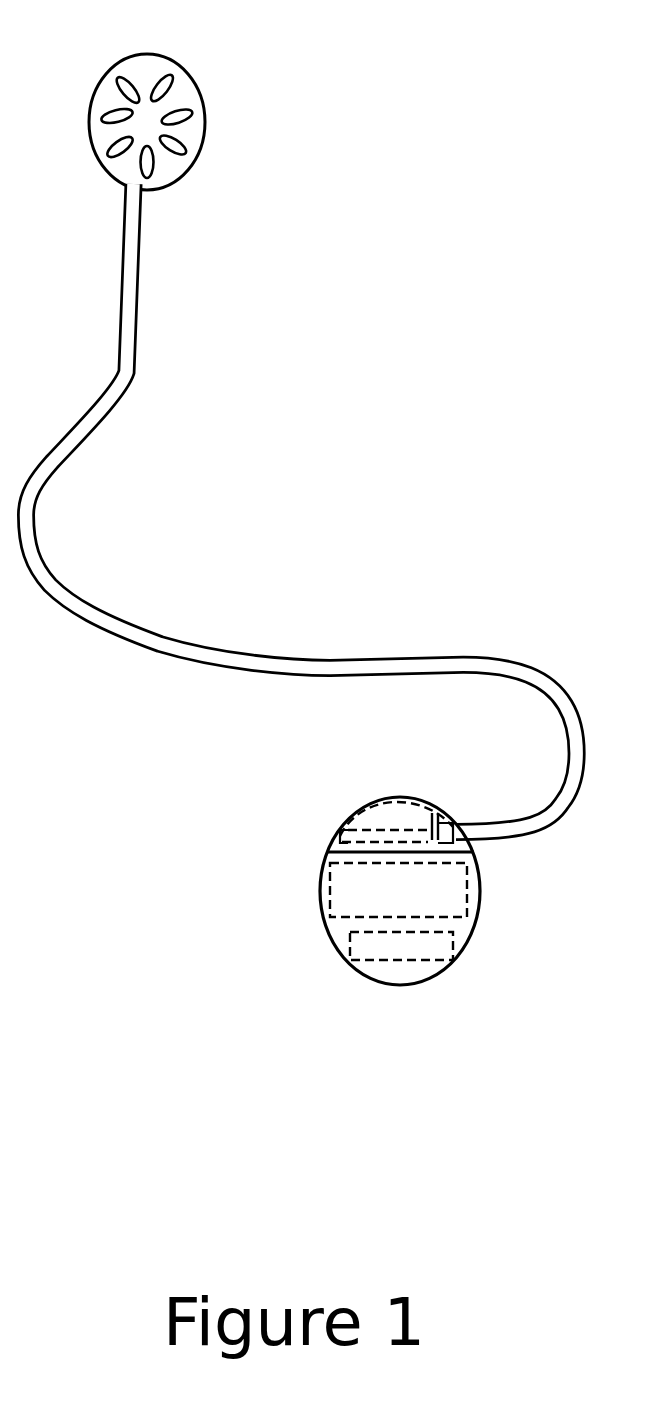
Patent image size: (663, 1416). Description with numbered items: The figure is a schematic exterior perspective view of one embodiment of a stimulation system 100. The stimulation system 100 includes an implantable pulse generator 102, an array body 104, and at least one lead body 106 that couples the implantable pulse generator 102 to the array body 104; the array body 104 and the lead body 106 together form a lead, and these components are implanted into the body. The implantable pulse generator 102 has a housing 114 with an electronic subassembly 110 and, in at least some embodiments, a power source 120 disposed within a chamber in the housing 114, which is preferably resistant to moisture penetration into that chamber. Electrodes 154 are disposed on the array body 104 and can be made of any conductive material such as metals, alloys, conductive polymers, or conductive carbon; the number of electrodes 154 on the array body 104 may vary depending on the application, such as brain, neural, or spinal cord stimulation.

The stimulation system 100 is at (430, 150).
The implantable pulse generator 102 is at (321, 903).
The array body 104 is at (237, 58).
The lead body 106 is at (140, 303).
The electronic subassembly 110 is at (420, 895).
The housing 114 is at (399, 798).
The power source 120 is at (425, 945).
The electrodes 154 is at (125, 86).